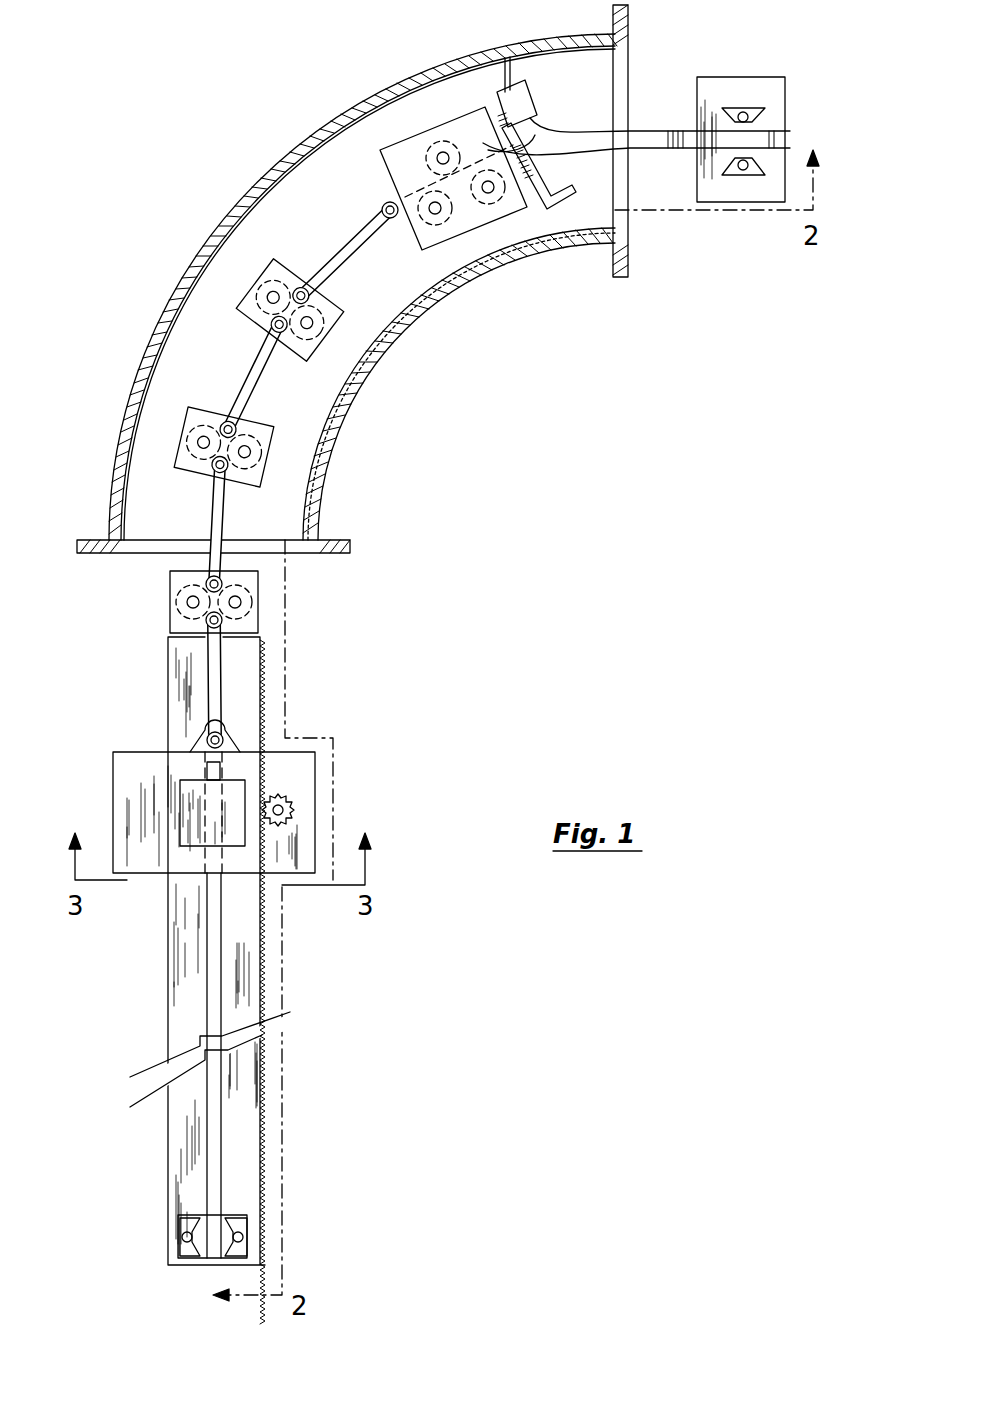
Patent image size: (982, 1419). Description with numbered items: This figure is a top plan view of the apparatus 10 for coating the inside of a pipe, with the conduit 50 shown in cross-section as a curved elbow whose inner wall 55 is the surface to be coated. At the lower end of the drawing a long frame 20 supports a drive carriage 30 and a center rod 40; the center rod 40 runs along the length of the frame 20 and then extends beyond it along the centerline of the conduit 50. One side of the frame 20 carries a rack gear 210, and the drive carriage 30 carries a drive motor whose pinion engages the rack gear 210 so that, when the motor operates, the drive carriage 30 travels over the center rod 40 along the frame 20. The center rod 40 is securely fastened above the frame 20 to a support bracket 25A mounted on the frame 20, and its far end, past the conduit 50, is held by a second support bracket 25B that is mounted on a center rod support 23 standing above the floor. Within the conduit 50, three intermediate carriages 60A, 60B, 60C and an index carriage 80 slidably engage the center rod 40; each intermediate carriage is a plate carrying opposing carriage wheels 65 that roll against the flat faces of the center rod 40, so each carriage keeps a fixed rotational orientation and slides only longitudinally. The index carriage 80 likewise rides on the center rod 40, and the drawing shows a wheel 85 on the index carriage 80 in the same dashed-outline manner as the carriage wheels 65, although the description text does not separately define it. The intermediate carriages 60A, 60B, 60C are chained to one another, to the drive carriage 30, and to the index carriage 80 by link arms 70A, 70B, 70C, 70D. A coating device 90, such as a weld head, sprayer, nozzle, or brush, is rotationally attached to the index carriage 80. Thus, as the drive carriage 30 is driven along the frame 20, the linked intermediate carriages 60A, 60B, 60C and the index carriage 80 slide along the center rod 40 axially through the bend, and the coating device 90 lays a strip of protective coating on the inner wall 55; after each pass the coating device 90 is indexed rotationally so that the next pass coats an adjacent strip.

The apparatus 10 is at (88, 641).
The frame 20 is at (167, 1147).
The rack gear 210 is at (265, 1198).
The center rod support 23 is at (758, 190).
The support bracket 25A is at (185, 1250).
The second support bracket 25B is at (757, 112).
The drive carriage 30 is at (118, 805).
The center rod 40 is at (207, 985).
The conduit 50 is at (170, 318).
The inner wall 55 is at (131, 462).
The intermediate carriage 60A is at (255, 624).
The intermediate carriage 60B is at (188, 420).
The intermediate carriage 60C is at (267, 278).
The carriage wheel 65 is at (318, 312).
The link arm 70A is at (216, 688).
The link arm 70B is at (214, 514).
The link arm 70C is at (258, 372).
The link arm 70D is at (340, 252).
The index carriage 80 is at (403, 153).
The roller 85 is at (443, 150).
The coating device 90 is at (520, 103).